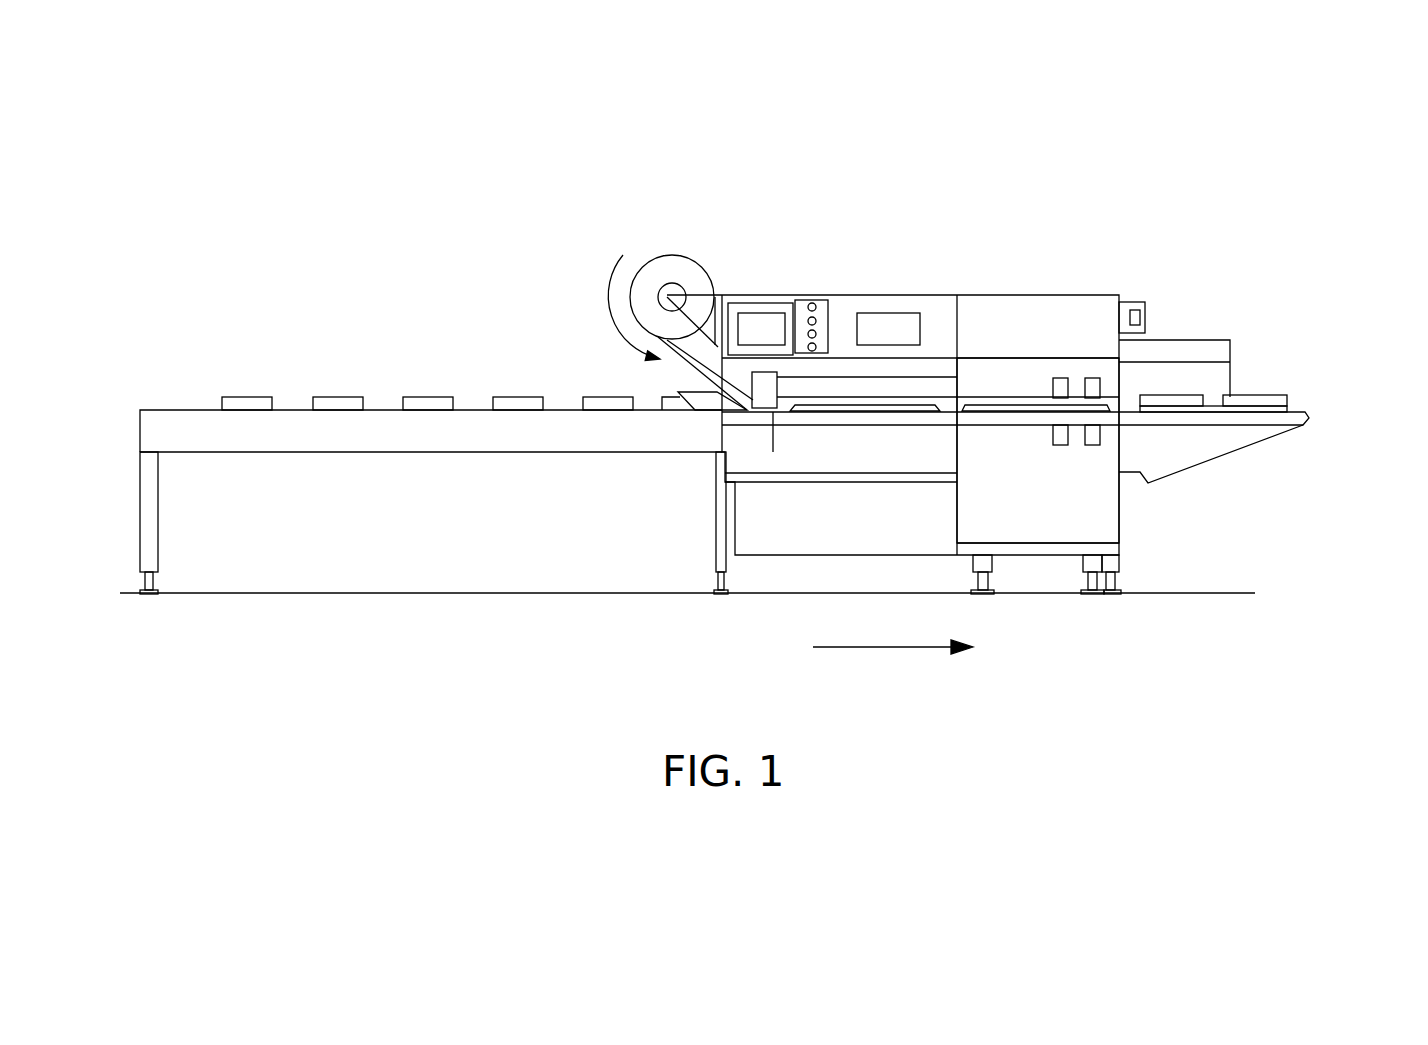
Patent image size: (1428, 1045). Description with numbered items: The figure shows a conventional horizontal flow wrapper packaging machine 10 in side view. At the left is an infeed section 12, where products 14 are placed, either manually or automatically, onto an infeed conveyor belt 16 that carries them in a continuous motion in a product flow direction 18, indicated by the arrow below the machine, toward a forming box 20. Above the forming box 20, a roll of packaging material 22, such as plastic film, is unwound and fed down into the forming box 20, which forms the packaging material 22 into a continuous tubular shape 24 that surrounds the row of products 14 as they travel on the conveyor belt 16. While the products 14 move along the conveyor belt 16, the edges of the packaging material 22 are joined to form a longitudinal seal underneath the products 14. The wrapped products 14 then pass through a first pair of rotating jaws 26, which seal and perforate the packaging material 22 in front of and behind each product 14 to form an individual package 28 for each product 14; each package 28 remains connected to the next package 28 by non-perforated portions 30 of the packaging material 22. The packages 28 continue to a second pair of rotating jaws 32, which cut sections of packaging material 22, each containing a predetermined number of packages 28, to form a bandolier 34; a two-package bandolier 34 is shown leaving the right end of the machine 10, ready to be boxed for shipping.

The flow wrapper packaging machine 10 is at (343, 148).
The infeed section 12 is at (258, 290).
The products 14 is at (250, 397).
The infeed conveyor belt 16 is at (308, 427).
The product flow direction 18 is at (892, 650).
The forming box 20 is at (762, 372).
The roll of packaging material 22 is at (683, 257).
The tubular shape 24 is at (945, 407).
The first pair of rotating jaws 26 is at (1058, 378).
The package 28 is at (1188, 401).
The non-perforated portions 30 is at (1213, 397).
The second pair of rotating jaws 32 is at (1100, 385).
The bandolier 34 is at (1273, 392).